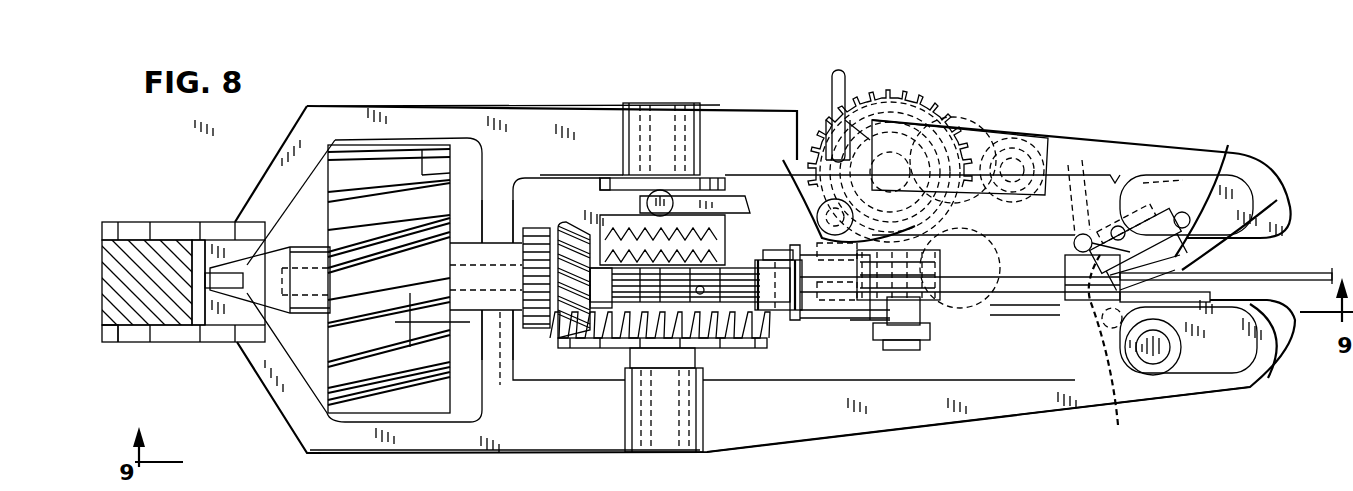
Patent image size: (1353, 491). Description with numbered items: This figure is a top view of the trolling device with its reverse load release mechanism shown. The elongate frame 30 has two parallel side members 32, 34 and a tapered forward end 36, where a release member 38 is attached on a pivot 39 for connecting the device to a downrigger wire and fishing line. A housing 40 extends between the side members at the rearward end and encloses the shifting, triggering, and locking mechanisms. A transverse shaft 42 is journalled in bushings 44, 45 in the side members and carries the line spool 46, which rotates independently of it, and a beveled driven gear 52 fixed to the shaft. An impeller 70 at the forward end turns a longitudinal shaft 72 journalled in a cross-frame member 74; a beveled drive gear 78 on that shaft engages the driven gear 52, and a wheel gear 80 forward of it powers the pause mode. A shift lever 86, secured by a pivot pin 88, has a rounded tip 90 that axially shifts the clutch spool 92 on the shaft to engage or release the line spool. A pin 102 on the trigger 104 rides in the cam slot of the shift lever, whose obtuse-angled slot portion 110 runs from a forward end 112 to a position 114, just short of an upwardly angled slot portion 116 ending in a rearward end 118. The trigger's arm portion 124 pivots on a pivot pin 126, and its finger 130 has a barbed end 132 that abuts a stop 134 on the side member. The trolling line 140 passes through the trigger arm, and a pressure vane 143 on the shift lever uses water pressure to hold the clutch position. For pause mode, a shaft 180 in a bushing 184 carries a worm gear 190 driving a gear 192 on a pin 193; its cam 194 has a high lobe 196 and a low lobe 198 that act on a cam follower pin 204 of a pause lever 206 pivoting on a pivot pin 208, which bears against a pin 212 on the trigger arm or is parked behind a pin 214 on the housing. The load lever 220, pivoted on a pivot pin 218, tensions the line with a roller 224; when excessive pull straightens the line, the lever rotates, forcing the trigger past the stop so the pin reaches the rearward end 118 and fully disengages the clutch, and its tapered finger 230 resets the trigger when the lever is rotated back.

The elongate frame 30 is at (280, 146).
The side member 32 is at (385, 106).
The side member 34 is at (392, 462).
The tapered forward end 36 is at (276, 405).
The release member 38 is at (148, 248).
The pivot 39 is at (115, 345).
The housing 40 is at (960, 365).
The shaft 42 is at (637, 387).
The bushing 44 is at (693, 100).
The bushing 45 is at (637, 422).
The line spool 46 is at (598, 305).
The beveled driven gear 52 is at (764, 355).
The impeller 70 is at (422, 150).
The shaft 72 is at (507, 365).
The cross-frame member 74 is at (482, 350).
The beveled drive gear 78 is at (562, 338).
The wheel gear 80 is at (540, 230).
The shift lever 86 is at (1048, 178).
The pivot pin 88 is at (783, 160).
The rounded tip 90 is at (640, 201).
The clutch spool 92 is at (604, 170).
The pin 102 is at (1133, 207).
The trigger 104 is at (1080, 268).
The obtuse-angled slot portion 110 is at (1147, 212).
The forward end 112 is at (1100, 232).
The position 114 is at (1178, 250).
The upwardly angled slot portion 116 is at (1265, 197).
The rearward end 118 is at (1226, 195).
The arm portion 124 is at (1195, 306).
The pivot pin 126 is at (1155, 352).
The finger 130 is at (1068, 163).
The barbed end 132 is at (1032, 220).
The stop 134 is at (1110, 173).
The trolling line 140 is at (1287, 273).
The pressure vane 143 is at (818, 94).
The shaft 180 is at (823, 330).
The bushing 184 is at (772, 175).
The worm gear 190 is at (932, 325).
The gear 192 is at (858, 95).
The pin 193 is at (885, 118).
The cam 194 is at (930, 118).
The high lobe 196 is at (996, 148).
The low lobe 198 is at (900, 88).
The cam follower pin 204 is at (955, 128).
The pause lever 206 is at (1082, 158).
The pivot pin 208 is at (1020, 148).
The pin 212 is at (1112, 330).
The pin 214 is at (1115, 350).
The pivot pin 218 is at (903, 352).
The load lever 220 is at (822, 335).
The roller 224 is at (800, 330).
The tapered finger 230 is at (1232, 305).